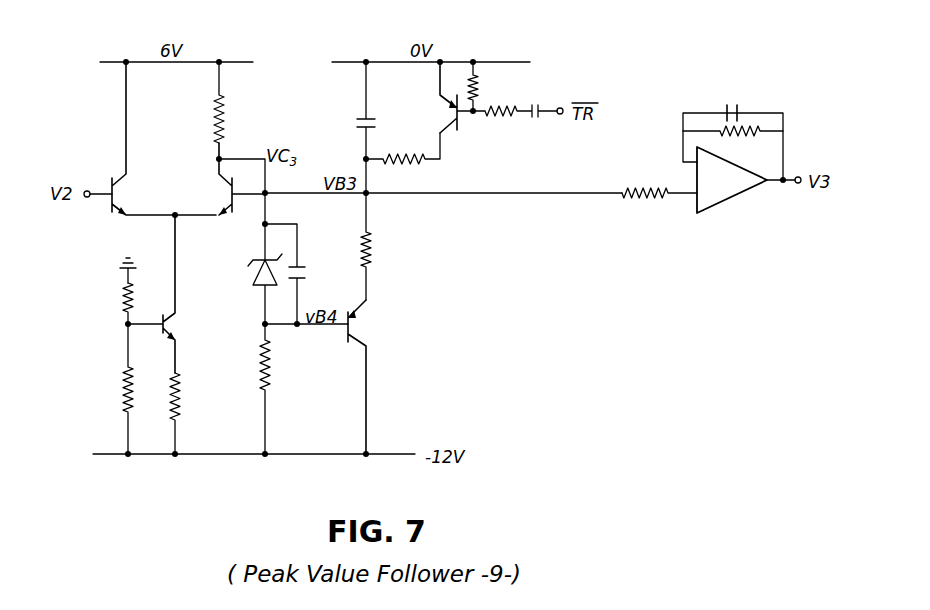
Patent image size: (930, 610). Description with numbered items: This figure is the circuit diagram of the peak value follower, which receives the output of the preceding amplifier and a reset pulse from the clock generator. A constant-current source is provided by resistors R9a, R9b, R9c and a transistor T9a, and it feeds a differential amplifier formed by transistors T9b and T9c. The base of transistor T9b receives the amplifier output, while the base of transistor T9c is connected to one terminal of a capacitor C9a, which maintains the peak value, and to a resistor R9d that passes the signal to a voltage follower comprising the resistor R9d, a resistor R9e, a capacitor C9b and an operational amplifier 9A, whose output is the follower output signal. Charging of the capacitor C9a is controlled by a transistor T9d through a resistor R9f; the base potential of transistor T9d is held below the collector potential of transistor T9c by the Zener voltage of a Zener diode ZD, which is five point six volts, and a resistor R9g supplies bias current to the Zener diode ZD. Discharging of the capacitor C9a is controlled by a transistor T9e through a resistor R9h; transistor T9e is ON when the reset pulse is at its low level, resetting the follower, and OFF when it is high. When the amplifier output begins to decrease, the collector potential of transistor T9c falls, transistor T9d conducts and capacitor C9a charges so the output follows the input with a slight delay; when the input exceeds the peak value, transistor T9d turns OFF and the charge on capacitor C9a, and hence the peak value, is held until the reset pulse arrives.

The transistor T9a is at (178, 325).
The transistor T9b is at (112, 176).
The transistor T9c is at (219, 176).
The transistor T9d is at (368, 338).
The transistor T9e is at (446, 112).
The resistor R9a is at (123, 298).
The resistor R9b is at (122, 394).
The resistor R9c is at (180, 410).
The resistor R9d is at (637, 204).
The resistor R9e is at (756, 134).
The resistor R9f is at (372, 252).
The resistor R9g is at (270, 386).
The resistor R9h is at (410, 166).
The capacitor C9a is at (358, 118).
The capacitor C9b is at (725, 102).
The Zener diode ZD is at (252, 270).
The operational amplifier 9A is at (728, 200).